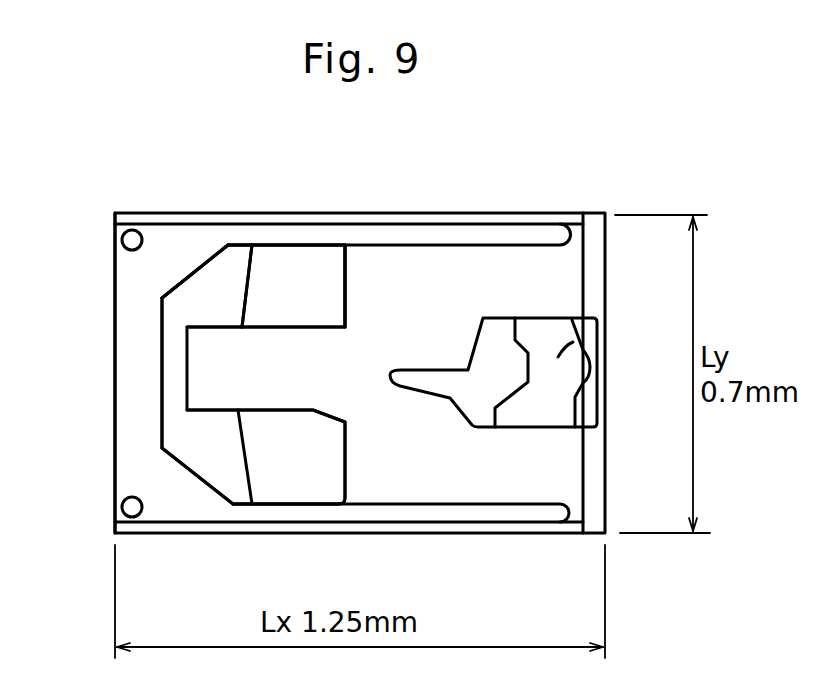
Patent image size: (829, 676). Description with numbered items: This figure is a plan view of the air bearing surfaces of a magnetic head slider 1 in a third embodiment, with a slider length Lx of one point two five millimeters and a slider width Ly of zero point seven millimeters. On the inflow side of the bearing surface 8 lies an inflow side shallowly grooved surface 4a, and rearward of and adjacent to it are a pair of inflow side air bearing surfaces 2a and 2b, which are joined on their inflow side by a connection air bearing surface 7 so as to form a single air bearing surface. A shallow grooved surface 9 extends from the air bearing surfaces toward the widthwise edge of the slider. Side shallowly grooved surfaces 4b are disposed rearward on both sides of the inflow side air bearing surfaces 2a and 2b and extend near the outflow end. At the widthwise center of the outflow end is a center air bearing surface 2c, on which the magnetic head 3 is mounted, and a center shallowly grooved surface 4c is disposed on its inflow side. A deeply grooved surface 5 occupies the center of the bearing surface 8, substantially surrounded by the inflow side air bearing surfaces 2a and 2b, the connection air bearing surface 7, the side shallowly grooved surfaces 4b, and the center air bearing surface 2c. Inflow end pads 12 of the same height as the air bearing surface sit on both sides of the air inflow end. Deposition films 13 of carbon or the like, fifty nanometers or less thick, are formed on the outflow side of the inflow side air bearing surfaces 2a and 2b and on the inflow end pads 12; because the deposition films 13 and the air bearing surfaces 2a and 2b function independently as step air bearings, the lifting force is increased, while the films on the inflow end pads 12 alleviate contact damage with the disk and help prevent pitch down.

The slider 1 is at (115, 442).
The inflow side air bearing surface 2a is at (228, 295).
The inflow side air bearing surface 2b is at (228, 455).
The center air bearing surface 2c is at (603, 340).
The magnetic head 3 is at (588, 372).
The inflow side shallowly grooved surface 4a is at (137, 396).
The side shallowly grooved surface 4b is at (377, 243).
The center shallowly grooved surface 4c is at (503, 375).
The deeply grooved surface 5 is at (395, 335).
The connection air bearing surface 7 is at (173, 360).
The bearing surface 8 is at (230, 266).
The shallow grooved surface 9 is at (242, 233).
The inflow end pad 12 is at (116, 242).
The deposition film 13 is at (291, 277).